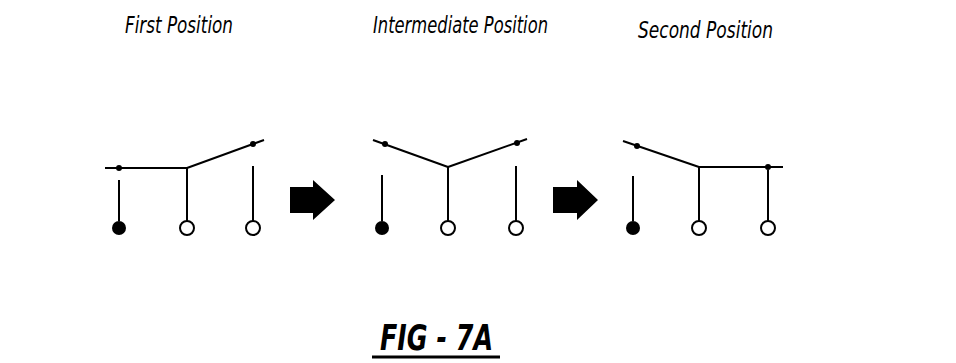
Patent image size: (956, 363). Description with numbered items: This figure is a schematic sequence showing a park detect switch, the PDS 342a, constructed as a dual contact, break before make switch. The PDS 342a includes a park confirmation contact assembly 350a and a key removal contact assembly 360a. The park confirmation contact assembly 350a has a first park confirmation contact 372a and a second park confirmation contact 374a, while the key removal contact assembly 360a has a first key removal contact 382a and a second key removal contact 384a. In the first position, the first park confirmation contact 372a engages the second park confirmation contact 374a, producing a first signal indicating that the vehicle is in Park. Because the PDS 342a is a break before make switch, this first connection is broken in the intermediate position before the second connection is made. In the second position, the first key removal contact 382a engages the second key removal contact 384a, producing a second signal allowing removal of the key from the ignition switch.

The park confirmation contact assembly 350a is at (92, 163).
The key removal contact assembly 360a is at (268, 153).
The first park confirmation contact 372a is at (119, 166).
The first key removal contact 382a is at (253, 144).
The park detect switch (PDS) 342a is at (182, 148).
The second park confirmation contact 374a is at (119, 174).
The second key removal contact 384a is at (253, 168).